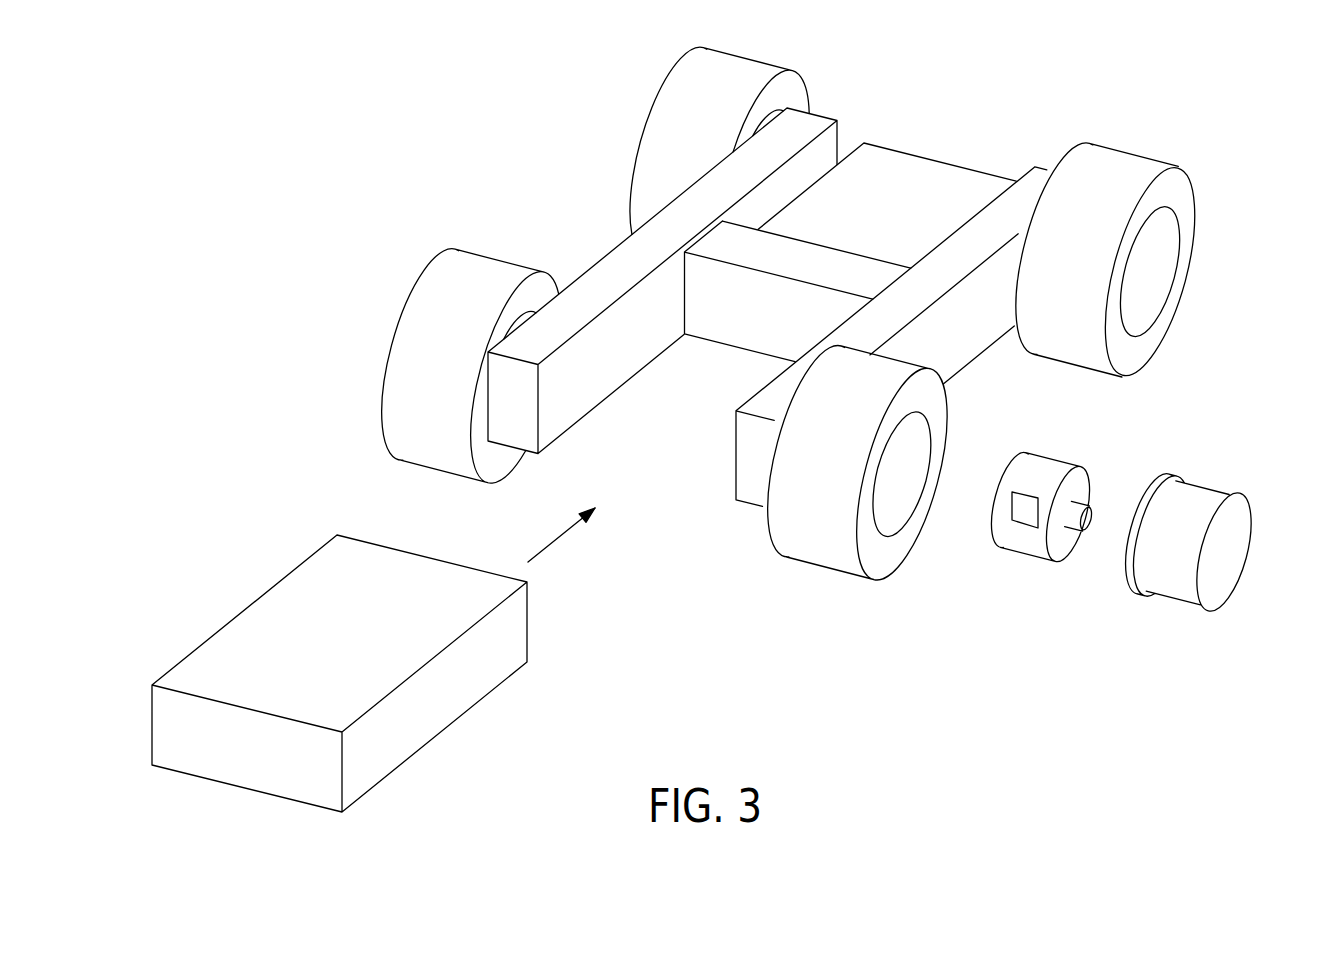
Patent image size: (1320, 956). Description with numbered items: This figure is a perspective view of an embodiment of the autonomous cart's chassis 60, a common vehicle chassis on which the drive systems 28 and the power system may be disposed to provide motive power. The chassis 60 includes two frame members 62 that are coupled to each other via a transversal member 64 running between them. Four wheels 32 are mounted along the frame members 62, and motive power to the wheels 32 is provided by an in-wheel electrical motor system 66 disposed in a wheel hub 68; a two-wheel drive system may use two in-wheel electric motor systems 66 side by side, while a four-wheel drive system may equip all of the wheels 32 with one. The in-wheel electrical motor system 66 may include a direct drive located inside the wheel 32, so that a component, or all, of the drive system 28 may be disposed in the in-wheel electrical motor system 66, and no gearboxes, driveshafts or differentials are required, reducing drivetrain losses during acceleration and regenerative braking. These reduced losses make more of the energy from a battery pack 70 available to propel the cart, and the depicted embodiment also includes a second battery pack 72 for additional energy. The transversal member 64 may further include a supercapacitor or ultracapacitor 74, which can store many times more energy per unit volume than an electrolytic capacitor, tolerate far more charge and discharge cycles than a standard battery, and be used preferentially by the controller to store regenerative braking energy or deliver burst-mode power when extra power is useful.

The drive system 28 is at (1027, 513).
The wheel 32 is at (637, 147).
The chassis 60 is at (756, 296).
The frame member 62 is at (573, 403).
The transversal member 64 is at (742, 328).
The in-wheel electrical motor system 66 is at (1066, 523).
The wheel hub 68 is at (1197, 492).
The battery pack 70 is at (923, 183).
The second battery pack 72 is at (357, 673).
The supercapacitor 74 is at (813, 262).